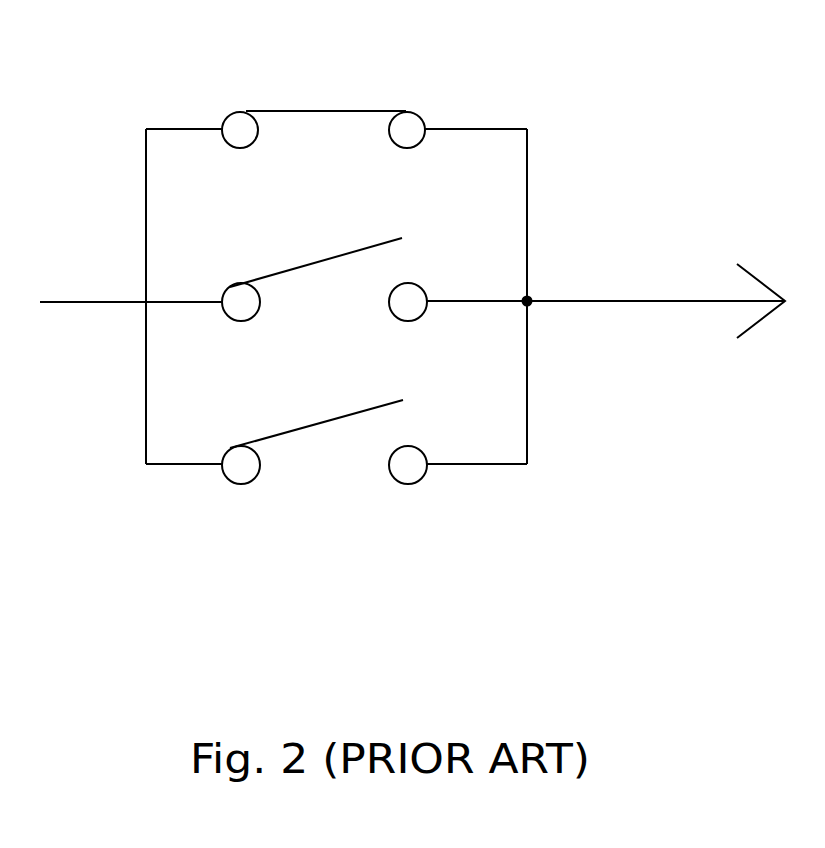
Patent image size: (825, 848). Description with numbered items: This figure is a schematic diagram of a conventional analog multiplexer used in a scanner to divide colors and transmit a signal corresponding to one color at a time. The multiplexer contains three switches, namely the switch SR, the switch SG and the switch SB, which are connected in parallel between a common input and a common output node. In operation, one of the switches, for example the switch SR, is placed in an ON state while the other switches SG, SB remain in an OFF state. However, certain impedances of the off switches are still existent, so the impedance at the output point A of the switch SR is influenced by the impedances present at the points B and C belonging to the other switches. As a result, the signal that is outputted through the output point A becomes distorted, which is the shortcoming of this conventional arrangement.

The switch SR is at (359, 109).
The switch SG is at (359, 279).
The switch SB is at (359, 442).
The output point A is at (527, 129).
The point B is at (527, 301).
The point C is at (527, 464).